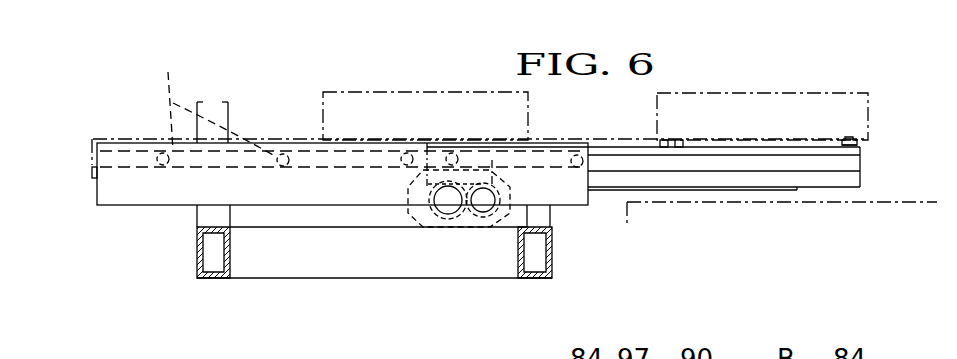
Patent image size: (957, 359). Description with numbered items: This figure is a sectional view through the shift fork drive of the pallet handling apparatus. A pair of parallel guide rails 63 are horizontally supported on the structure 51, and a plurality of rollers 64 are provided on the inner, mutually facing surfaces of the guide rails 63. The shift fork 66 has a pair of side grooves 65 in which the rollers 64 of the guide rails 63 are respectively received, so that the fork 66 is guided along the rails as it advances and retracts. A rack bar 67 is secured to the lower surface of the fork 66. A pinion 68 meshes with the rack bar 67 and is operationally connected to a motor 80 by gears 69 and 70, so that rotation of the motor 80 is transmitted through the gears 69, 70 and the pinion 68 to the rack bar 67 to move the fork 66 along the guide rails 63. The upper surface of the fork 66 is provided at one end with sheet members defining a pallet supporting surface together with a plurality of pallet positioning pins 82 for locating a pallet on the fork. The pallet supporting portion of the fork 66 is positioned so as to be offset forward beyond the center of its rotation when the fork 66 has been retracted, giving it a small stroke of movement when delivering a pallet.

The structure 51 is at (274, 263).
The guide rails 63 is at (142, 192).
The rollers 64 is at (211, 101).
The side grooves 65 is at (773, 168).
The shift fork 66 is at (829, 177).
The rack bar 67 is at (697, 193).
The pinion 68 is at (430, 218).
The gear 69 is at (452, 215).
The gear 70 is at (481, 216).
The motor 80 is at (503, 220).
The pallet positioning pins 82 is at (856, 136).